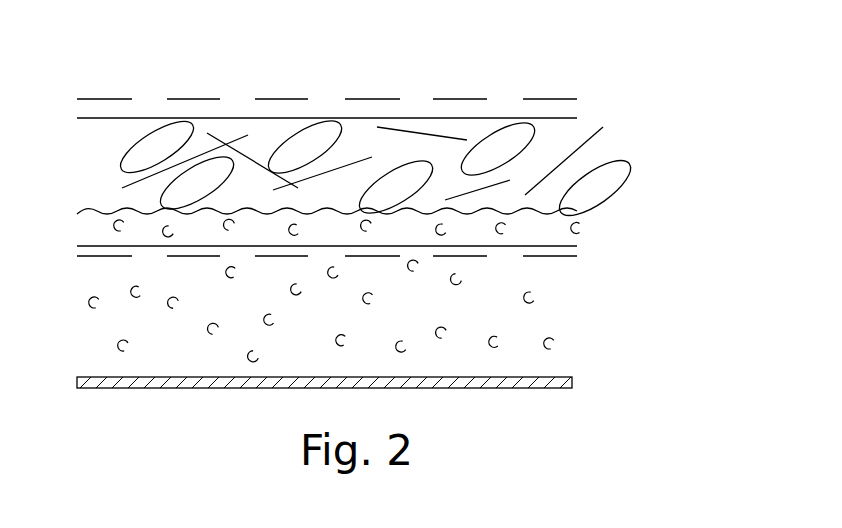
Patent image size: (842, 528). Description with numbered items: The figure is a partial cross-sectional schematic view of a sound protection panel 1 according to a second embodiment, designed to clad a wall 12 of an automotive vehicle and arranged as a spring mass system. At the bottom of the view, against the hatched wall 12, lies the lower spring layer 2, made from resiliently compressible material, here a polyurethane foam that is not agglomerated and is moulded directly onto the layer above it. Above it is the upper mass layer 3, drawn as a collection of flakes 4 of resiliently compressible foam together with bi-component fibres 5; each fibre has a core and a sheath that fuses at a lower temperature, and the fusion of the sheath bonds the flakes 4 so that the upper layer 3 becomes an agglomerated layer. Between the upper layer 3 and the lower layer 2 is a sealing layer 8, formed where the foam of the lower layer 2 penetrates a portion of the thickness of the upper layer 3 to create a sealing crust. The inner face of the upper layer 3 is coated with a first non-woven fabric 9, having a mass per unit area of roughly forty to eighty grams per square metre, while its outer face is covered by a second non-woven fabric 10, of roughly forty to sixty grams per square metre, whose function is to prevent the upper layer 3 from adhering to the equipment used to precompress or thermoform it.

The sound protection panel 1 is at (417, 85).
The second non-woven fabric 10 is at (578, 95).
The upper mass layer 3 is at (625, 147).
The bi-component fibres 5 is at (257, 147).
The flakes 4 is at (600, 188).
The sealing layer 8 is at (598, 228).
The first non-woven fabric 9 is at (590, 257).
The lower spring layer 2 is at (593, 325).
The wall 12 is at (591, 395).